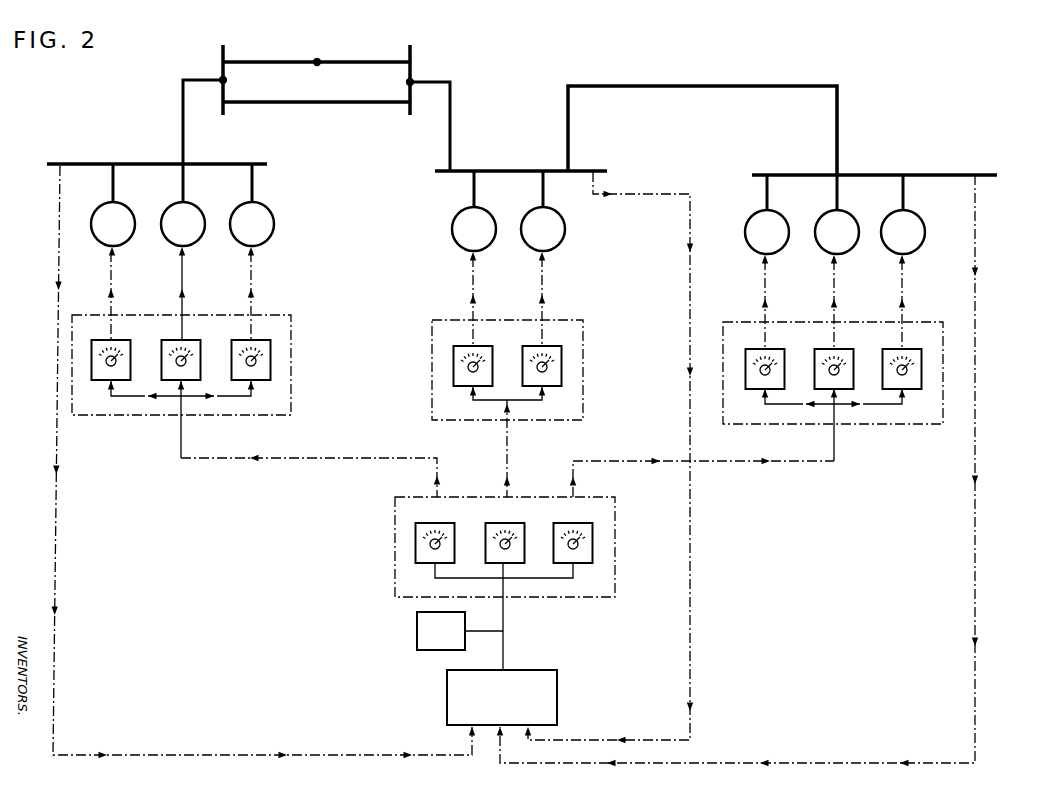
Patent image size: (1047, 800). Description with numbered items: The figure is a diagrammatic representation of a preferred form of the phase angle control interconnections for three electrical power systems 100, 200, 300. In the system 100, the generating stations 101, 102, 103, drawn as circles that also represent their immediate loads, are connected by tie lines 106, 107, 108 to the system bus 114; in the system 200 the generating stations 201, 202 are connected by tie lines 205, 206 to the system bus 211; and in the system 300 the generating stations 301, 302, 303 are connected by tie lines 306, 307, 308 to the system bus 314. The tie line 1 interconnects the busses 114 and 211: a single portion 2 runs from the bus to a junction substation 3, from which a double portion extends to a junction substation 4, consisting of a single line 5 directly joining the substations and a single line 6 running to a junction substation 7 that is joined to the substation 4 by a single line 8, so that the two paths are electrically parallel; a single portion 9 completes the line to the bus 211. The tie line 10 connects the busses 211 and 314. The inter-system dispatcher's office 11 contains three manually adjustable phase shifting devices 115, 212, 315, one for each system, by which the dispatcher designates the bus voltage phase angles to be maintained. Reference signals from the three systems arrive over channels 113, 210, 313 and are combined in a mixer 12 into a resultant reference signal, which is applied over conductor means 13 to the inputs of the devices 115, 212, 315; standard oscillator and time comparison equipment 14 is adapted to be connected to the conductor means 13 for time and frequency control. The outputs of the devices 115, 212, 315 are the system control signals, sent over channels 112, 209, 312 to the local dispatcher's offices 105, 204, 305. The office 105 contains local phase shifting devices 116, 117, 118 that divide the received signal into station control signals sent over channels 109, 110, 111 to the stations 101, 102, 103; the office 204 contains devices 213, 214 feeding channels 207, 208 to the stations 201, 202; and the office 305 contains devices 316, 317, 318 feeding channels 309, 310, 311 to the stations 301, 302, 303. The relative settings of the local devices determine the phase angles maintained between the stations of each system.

The tie line 1 is at (313, 109).
The single line portion 2 is at (185, 131).
The junction substation 3 is at (221, 78).
The junction substation 4 is at (412, 80).
The single line 5 is at (308, 104).
The single line 6 is at (272, 60).
The junction substation 7 is at (318, 60).
The single line 8 is at (372, 60).
The single line portion 9 is at (448, 137).
The tie line 10 is at (692, 84).
The inter-system dispatcher's office 11 is at (532, 580).
The mixer 12 is at (558, 686).
The conductor means 13 is at (507, 618).
The standard oscillator and time comparison equipment 14 is at (416, 635).
The electrical power system 100 is at (244, 419).
The generating station 101 is at (128, 238).
The generating station 102 is at (198, 238).
The generating station 103 is at (267, 238).
The local dispatcher's office 105 is at (200, 399).
The tie line 106 is at (115, 187).
The tie line 107 is at (185, 187).
The tie line 108 is at (254, 187).
The channel 109 is at (113, 278).
The channel 110 is at (184, 281).
The channel 111 is at (253, 281).
The channel 112 is at (283, 458).
The channel 113 is at (57, 256).
The system bus 114 is at (71, 162).
The phase shifting device 115 is at (464, 519).
The phase shifting device 116 is at (117, 341).
The phase shifting device 117 is at (187, 341).
The phase shifting device 118 is at (268, 350).
The electrical power system 200 is at (513, 438).
The generating station 201 is at (489, 243).
The generating station 202 is at (558, 243).
The local dispatcher's office 204 is at (554, 379).
The tie line 205 is at (476, 187).
The tie line 206 is at (545, 187).
The channel 207 is at (475, 283).
The channel 208 is at (544, 283).
The channel 209 is at (505, 449).
The channel 210 is at (688, 284).
The system bus 211 is at (597, 170).
The phase shifting device 212 is at (534, 519).
The phase shifting device 213 is at (479, 347).
The phase shifting device 214 is at (556, 349).
The electrical power system 300 is at (764, 418).
The generating station 301 is at (782, 246).
The generating station 302 is at (852, 246).
The generating station 303 is at (918, 246).
The local dispatcher's office 305 is at (833, 408).
The tie line 306 is at (769, 189).
The tie line 307 is at (839, 189).
The tie line 308 is at (905, 189).
The channel 309 is at (767, 287).
The channel 310 is at (836, 287).
The channel 311 is at (904, 288).
The channel 312 is at (750, 460).
The channel 313 is at (976, 290).
The system bus 314 is at (887, 156).
The phase shifting device 315 is at (602, 519).
The phase shifting device 316 is at (771, 349).
The phase shifting device 317 is at (840, 349).
The phase shifting device 318 is at (931, 346).